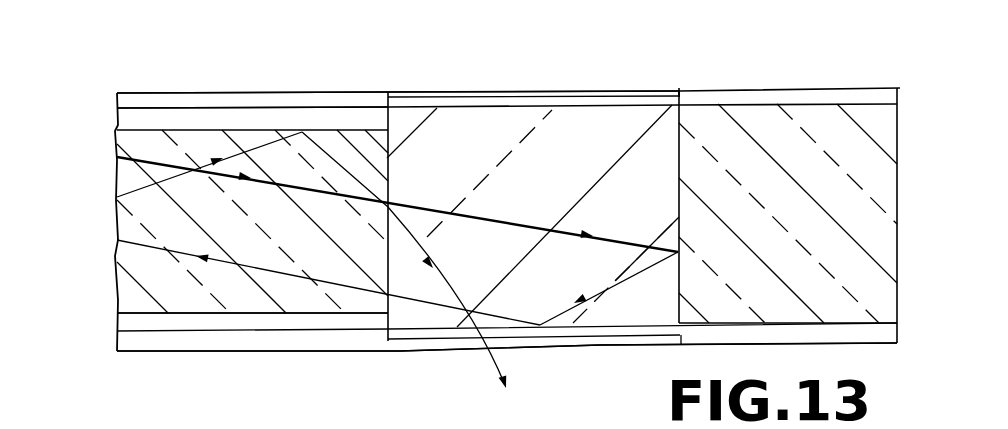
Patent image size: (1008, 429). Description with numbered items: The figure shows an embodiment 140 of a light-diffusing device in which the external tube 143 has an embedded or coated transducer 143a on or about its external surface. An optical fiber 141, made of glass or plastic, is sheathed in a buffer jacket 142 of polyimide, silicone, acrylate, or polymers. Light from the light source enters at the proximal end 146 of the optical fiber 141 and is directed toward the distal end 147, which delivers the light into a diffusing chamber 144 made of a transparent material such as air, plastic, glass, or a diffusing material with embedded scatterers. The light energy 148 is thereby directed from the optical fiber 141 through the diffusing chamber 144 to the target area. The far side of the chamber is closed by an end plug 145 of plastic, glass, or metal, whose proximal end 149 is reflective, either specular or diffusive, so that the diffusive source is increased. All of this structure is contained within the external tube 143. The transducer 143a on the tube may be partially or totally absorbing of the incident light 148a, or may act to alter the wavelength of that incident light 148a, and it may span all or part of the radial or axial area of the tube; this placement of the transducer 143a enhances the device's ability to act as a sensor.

The embodiment 140 is at (266, 51).
The optical fiber 141 is at (118, 286).
The buffer jacket 142 is at (117, 128).
The external tube 143 is at (330, 91).
The transducer 143a is at (480, 91).
The diffusing chamber 144 is at (589, 159).
The end plug 145 is at (808, 126).
The proximal end 146 is at (117, 210).
The distal end 147 is at (393, 283).
The light energy 148 is at (506, 357).
The incident light 148a is at (290, 278).
The proximal end of the plug 149 is at (677, 138).